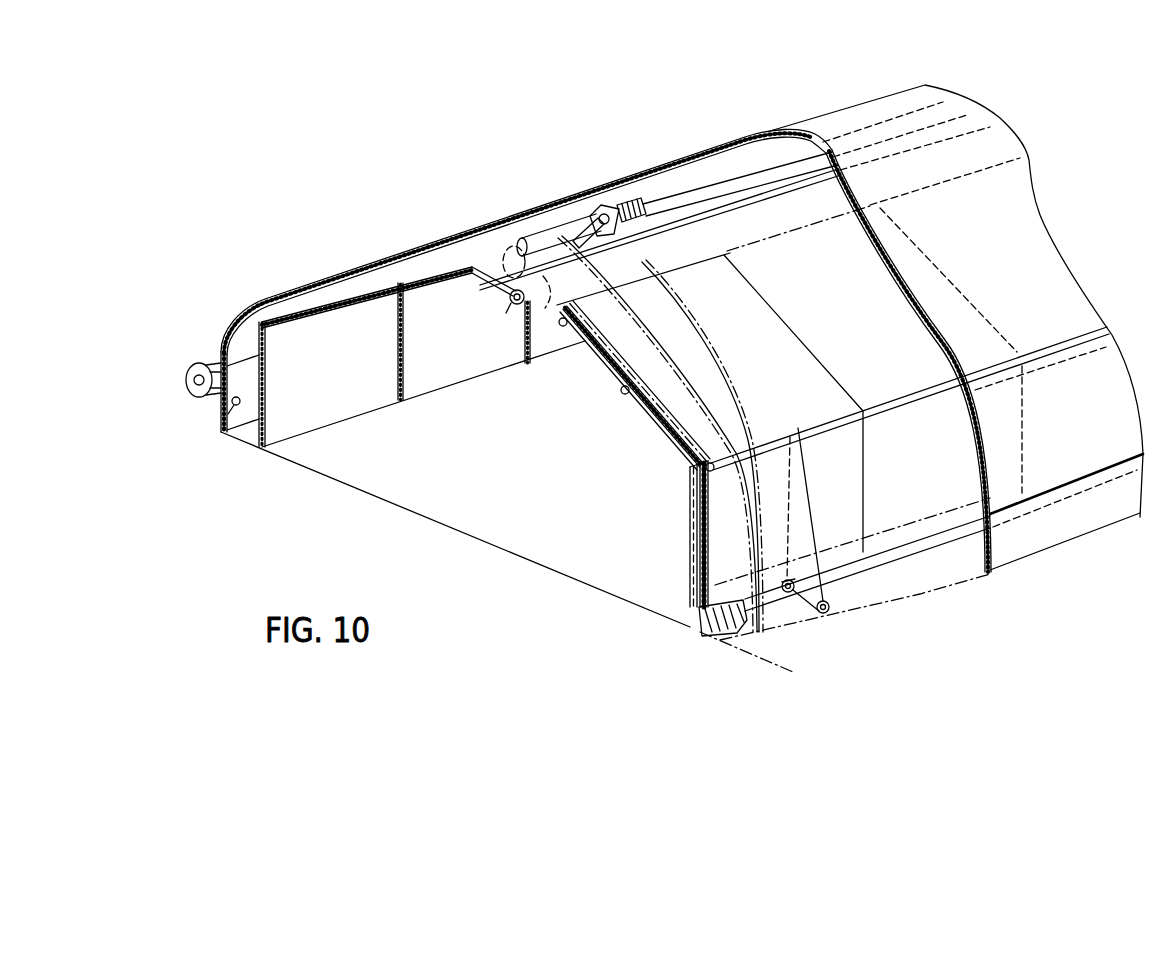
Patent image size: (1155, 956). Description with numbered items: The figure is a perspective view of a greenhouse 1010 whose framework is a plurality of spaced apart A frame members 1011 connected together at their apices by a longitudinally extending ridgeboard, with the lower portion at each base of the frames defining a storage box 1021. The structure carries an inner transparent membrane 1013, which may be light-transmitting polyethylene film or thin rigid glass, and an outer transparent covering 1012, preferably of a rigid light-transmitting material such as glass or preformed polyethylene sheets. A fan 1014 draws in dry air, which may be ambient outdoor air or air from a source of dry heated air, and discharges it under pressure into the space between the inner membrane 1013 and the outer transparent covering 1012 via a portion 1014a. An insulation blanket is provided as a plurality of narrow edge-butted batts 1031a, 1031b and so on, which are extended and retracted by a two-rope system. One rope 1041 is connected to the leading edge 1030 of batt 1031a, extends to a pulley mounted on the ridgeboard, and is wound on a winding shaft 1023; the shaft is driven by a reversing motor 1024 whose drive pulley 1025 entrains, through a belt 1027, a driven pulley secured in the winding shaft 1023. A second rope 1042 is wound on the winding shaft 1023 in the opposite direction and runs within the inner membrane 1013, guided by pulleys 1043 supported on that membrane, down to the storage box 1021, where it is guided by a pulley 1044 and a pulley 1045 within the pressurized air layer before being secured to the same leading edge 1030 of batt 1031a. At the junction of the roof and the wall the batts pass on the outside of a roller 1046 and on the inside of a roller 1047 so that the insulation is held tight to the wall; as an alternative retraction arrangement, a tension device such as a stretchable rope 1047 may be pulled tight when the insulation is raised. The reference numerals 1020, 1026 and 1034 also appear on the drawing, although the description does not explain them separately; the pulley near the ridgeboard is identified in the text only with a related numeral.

The greenhouse 1010 is at (705, 118).
The A frame members 1011 is at (398, 388).
The outer transparent covering 1012 is at (385, 257).
The inner transparent membrane 1013 is at (350, 290).
The fan 1014 is at (197, 367).
The portion 1014a is at (236, 405).
The vehicle body 1020 is at (974, 259).
The storage box 1021 is at (238, 380).
The winding shaft 1023 is at (562, 242).
The reversing motor 1024 is at (518, 305).
The drive pulley 1025 is at (510, 299).
The hinge block 1026 is at (607, 210).
The belt 1027 is at (515, 258).
The leading edge 1030 is at (694, 264).
The insulation blanket batt 1031a is at (796, 378).
The insulation blanket batt 1031b is at (903, 360).
The foot 1034 is at (700, 627).
The rope 1041 is at (616, 211).
The second rope 1042 is at (642, 260).
The pulleys 1043 is at (620, 393).
The pulley 1044 is at (779, 664).
The pulley 1045 is at (827, 613).
The roller 1046 is at (692, 468).
The roller 1047 is at (694, 483).